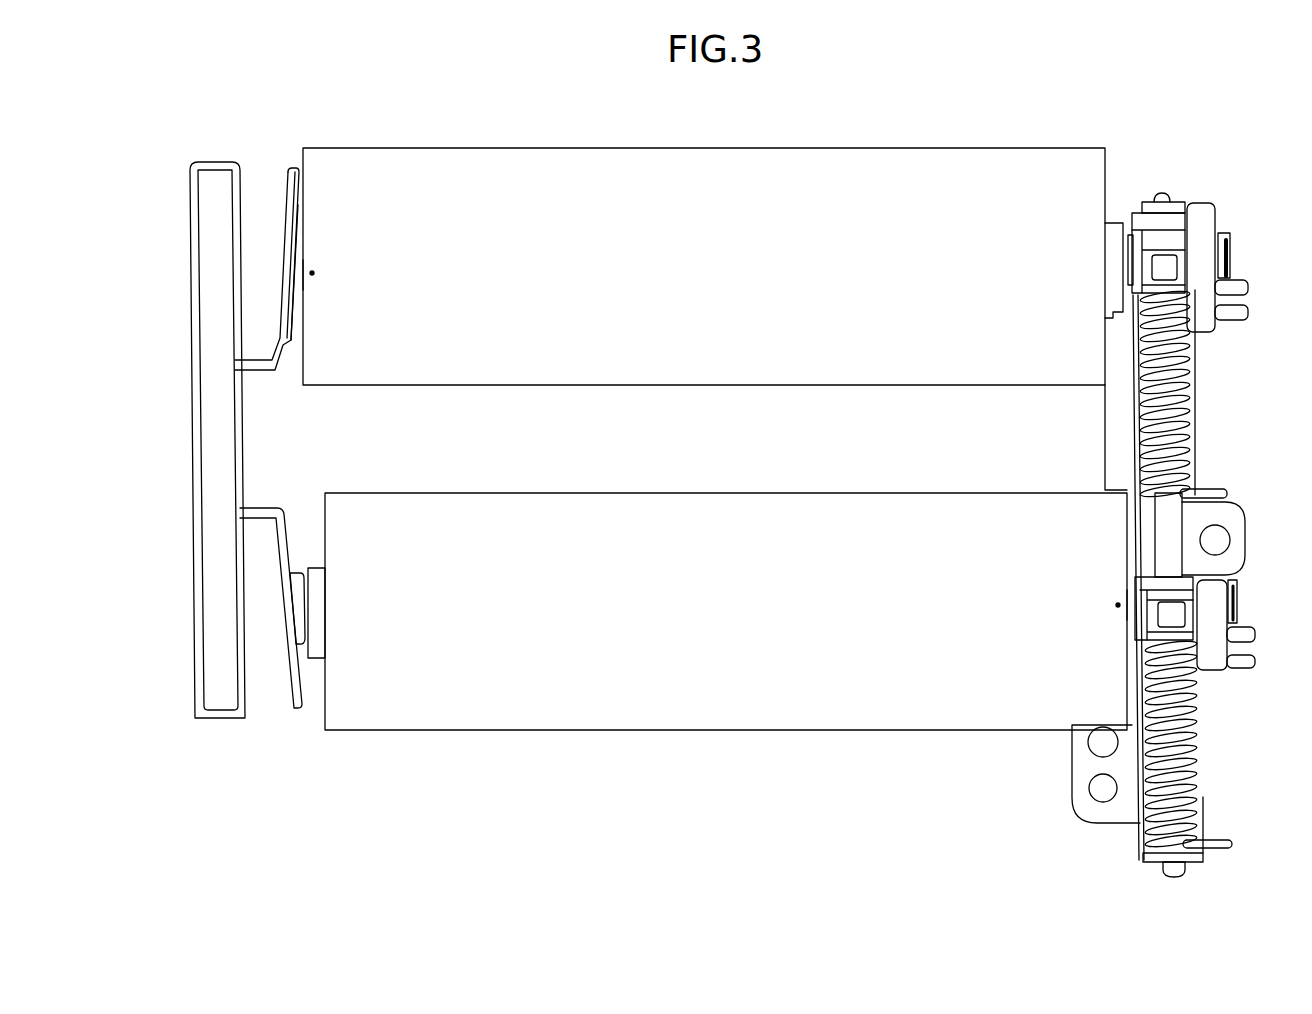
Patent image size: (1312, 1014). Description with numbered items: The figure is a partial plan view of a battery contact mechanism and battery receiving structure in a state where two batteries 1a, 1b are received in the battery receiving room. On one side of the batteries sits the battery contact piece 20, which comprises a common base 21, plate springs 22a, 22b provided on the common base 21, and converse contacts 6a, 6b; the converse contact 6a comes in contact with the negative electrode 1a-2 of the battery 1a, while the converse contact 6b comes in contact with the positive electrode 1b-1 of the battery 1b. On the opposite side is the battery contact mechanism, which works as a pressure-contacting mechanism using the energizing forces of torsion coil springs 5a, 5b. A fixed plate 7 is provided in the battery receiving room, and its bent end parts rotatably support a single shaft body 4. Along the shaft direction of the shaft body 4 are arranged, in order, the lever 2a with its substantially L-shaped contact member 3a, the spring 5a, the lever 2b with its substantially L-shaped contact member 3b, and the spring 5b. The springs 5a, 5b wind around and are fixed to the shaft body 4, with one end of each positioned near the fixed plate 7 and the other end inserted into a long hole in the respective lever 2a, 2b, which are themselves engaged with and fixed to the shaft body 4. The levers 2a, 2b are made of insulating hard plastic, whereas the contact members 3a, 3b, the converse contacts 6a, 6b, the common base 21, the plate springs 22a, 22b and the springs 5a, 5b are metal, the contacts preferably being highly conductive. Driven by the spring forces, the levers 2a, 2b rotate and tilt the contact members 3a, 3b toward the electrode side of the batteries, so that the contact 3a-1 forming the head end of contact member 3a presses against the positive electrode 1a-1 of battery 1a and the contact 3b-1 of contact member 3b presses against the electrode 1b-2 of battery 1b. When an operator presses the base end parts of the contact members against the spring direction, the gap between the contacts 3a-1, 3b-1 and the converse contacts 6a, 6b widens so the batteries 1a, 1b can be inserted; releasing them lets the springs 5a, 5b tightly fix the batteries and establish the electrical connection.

The battery 1a is at (808, 183).
The battery 1b is at (797, 515).
The positive electrode 1a-1 is at (1113, 225).
The negative electrode 1a-2 is at (318, 280).
The positive electrode 1b-1 is at (316, 638).
The negative electrode 1b-2 is at (1118, 605).
The lever 2a is at (1205, 228).
The lever 2b is at (1208, 593).
The contact member 3a is at (1228, 263).
The contact member 3b is at (1235, 605).
The contact 3a-1 is at (1133, 272).
The contact 3b-1 is at (1137, 612).
The shaft body 4 is at (1160, 200).
The torsion coil spring 5a is at (1190, 410).
The torsion coil spring 5b is at (1190, 750).
The converse contact 6a is at (300, 246).
The converse contact 6b is at (300, 597).
The fixed plate 7 is at (1225, 525).
The battery contact piece 20 is at (233, 446).
The common base 21 is at (191, 478).
The plate spring 22a is at (285, 185).
The plate spring 22b is at (292, 694).